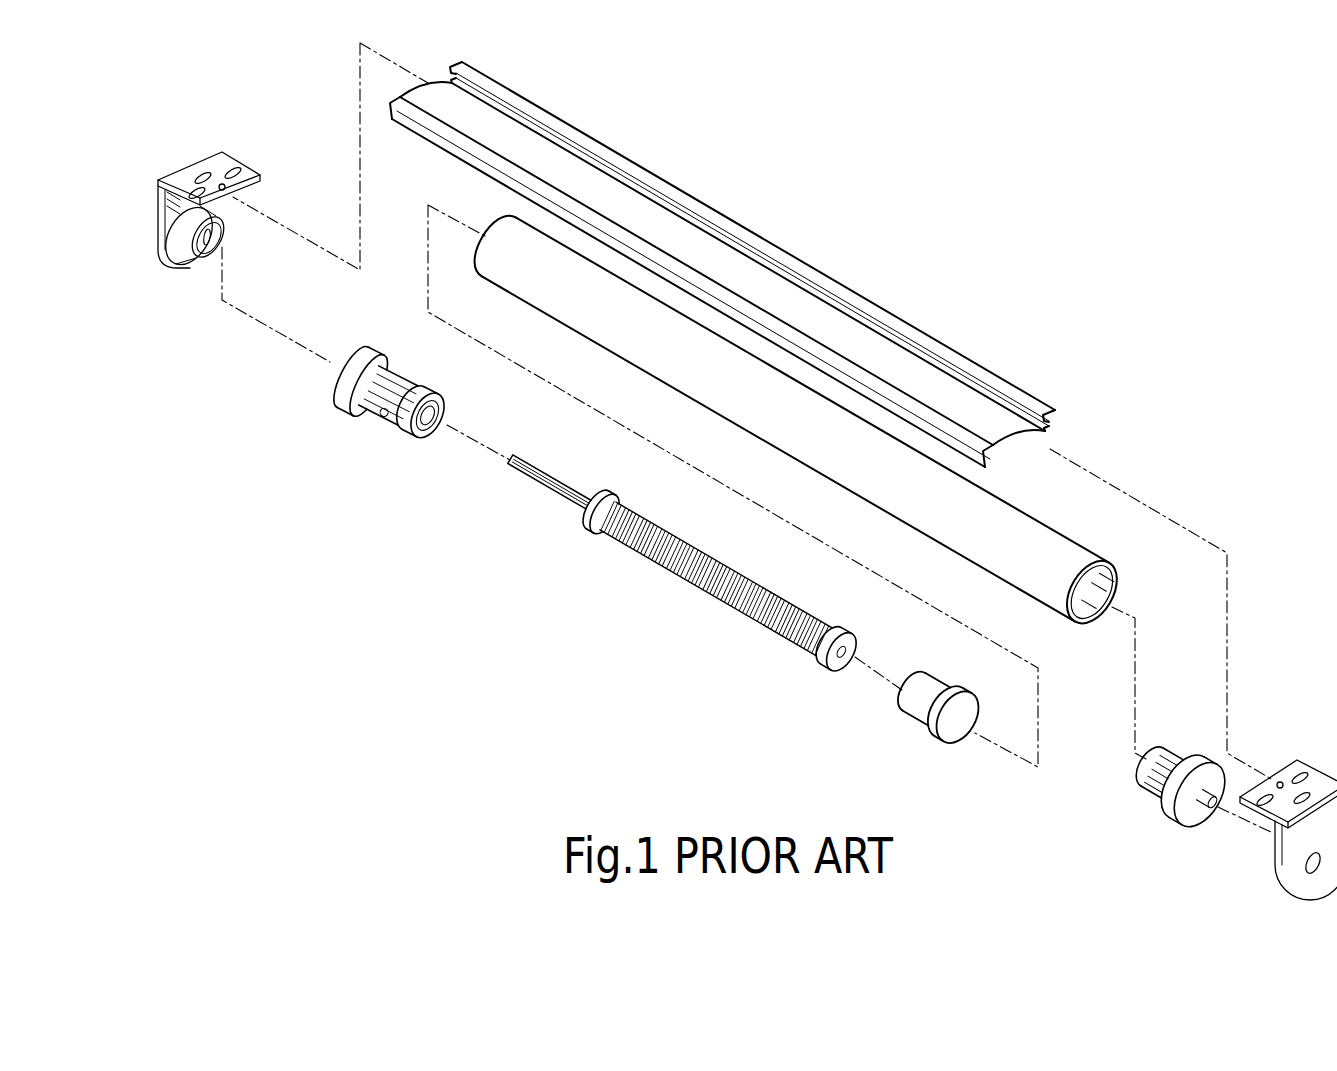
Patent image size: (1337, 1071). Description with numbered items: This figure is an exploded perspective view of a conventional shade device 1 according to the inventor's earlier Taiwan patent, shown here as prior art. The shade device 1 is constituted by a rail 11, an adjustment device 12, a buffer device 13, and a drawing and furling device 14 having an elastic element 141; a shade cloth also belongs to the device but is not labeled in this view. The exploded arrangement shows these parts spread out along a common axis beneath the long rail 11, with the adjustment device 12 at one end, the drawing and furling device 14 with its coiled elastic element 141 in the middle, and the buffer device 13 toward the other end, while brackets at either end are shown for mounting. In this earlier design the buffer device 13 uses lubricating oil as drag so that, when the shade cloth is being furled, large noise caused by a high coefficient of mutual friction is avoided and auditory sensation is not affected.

The shade device 1 is at (927, 285).
The rail 11 is at (710, 193).
The adjustment device 12 is at (358, 427).
The buffer device 13 is at (908, 732).
The drawing and furling device 14 is at (615, 569).
The elastic element 141 is at (668, 579).